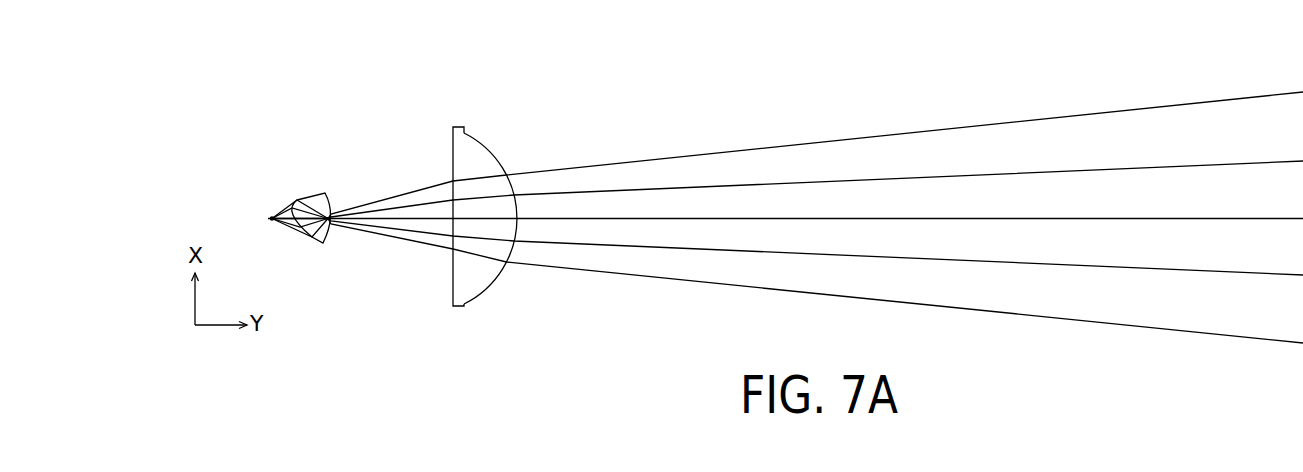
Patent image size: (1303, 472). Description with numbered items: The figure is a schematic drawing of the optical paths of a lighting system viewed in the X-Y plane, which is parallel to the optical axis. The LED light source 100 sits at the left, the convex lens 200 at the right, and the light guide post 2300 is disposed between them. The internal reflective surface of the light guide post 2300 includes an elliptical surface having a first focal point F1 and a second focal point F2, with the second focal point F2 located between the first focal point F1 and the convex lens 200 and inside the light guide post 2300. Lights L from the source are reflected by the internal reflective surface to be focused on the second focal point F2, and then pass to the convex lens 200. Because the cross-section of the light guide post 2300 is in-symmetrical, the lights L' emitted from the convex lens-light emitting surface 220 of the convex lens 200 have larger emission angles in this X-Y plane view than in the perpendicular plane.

The LED light source 100 is at (270, 216).
The light guide post 2300 is at (333, 172).
The convex lens 200 is at (509, 218).
The convex lens-light emitting surface 220 is at (486, 289).
The lights L is at (300, 172).
The lights emitted from the convex lens L' is at (815, 200).
The first focal point F1 is at (271, 215).
The second focal point F2 is at (330, 240).